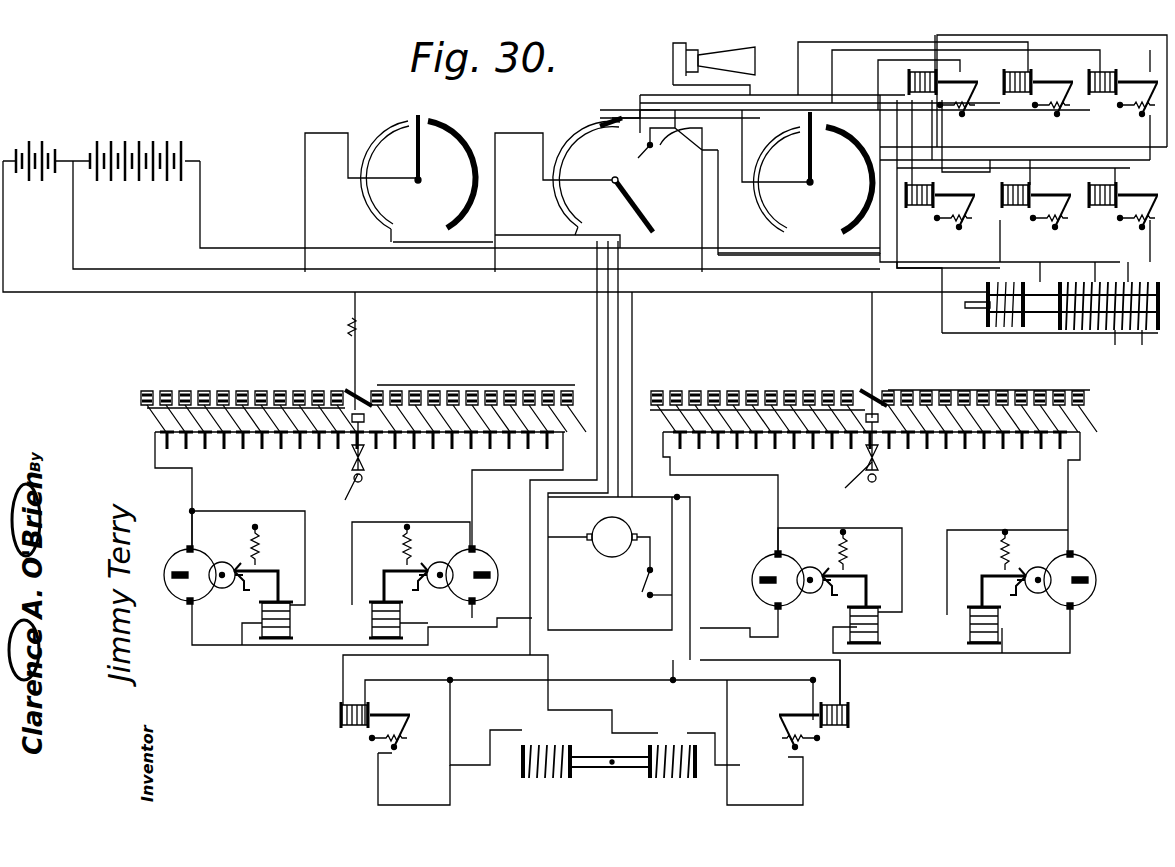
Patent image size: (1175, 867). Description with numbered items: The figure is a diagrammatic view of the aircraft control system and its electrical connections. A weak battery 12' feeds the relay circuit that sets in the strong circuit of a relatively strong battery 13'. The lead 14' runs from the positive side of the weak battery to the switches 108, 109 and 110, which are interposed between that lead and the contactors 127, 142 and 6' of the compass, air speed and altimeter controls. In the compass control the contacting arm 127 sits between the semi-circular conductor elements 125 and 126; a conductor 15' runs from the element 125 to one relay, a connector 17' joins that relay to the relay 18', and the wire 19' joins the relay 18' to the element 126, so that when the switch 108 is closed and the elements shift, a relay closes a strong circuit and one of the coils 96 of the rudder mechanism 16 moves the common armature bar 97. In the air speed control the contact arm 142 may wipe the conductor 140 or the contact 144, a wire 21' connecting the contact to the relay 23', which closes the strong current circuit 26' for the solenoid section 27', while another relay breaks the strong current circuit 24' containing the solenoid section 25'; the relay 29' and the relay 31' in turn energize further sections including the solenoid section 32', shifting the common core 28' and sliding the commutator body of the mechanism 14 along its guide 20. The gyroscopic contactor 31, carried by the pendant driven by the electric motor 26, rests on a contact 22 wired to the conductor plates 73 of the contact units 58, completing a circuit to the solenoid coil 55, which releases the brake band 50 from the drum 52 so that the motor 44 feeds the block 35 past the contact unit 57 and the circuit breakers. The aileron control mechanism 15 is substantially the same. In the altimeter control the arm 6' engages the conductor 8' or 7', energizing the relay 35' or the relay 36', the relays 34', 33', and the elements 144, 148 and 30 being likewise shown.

The weak battery 12' is at (38, 139).
The strong battery 13' is at (136, 139).
The lead 14' is at (472, 226).
The conductor 15' is at (540, 216).
The switch 108 is at (312, 128).
The switch 109 is at (505, 128).
The conductor element 125 is at (372, 210).
The conductor element 126 is at (466, 200).
The contacting arm 127 is at (422, 160).
The conductor 140 is at (552, 204).
The contact arm 142 is at (636, 205).
The contact 144 is at (602, 118).
The contact 148 is at (639, 137).
The switch 110 is at (689, 200).
The contact arm 6' is at (824, 148).
The semi-circular contactor 7' is at (773, 181).
The semi-circular conductor 8' is at (849, 179).
The wire 21' is at (883, 147).
The horn 33' is at (714, 63).
The relay 34' is at (1038, 91).
The relay 35' is at (1038, 84).
The relay 36' is at (1123, 83).
The relay 23' is at (1000, 216).
The strong current circuit 26' is at (962, 244).
The relay 29' is at (1036, 223).
The relay 31' is at (1123, 222).
The strong current circuit 24' is at (1025, 312).
The solenoid section 25' is at (1006, 324).
The solenoid section 27' is at (1109, 324).
The common core 28' is at (1049, 325).
The coil winding 30 is at (1115, 345).
The solenoid section 32' is at (1147, 349).
The mechanism 14 is at (361, 362).
The control mechanism 15 is at (870, 423).
The contact 22 is at (155, 388).
The conductor plate 73 is at (155, 432).
The contact unit 58 is at (262, 452).
The block 35 is at (611, 451).
The contacting unit 57 is at (366, 460).
The brake band 50 is at (222, 560).
The motor 44 is at (186, 600).
The brake drum 52 is at (226, 590).
The solenoid coil 55 is at (296, 622).
The electric motor 26 is at (592, 552).
The gyroscopic contactor 31 is at (642, 578).
The wire 19' is at (607, 450).
The connector 17' is at (579, 710).
The mechanism 16 is at (350, 735).
The relay 18' is at (792, 732).
The guide 20 is at (478, 770).
The solenoid coil 96 is at (548, 780).
The common armature bar 97 is at (605, 768).